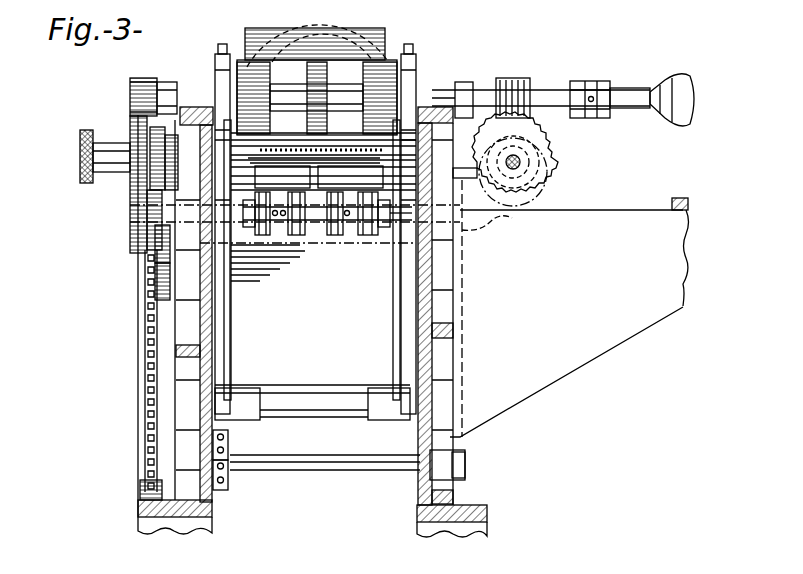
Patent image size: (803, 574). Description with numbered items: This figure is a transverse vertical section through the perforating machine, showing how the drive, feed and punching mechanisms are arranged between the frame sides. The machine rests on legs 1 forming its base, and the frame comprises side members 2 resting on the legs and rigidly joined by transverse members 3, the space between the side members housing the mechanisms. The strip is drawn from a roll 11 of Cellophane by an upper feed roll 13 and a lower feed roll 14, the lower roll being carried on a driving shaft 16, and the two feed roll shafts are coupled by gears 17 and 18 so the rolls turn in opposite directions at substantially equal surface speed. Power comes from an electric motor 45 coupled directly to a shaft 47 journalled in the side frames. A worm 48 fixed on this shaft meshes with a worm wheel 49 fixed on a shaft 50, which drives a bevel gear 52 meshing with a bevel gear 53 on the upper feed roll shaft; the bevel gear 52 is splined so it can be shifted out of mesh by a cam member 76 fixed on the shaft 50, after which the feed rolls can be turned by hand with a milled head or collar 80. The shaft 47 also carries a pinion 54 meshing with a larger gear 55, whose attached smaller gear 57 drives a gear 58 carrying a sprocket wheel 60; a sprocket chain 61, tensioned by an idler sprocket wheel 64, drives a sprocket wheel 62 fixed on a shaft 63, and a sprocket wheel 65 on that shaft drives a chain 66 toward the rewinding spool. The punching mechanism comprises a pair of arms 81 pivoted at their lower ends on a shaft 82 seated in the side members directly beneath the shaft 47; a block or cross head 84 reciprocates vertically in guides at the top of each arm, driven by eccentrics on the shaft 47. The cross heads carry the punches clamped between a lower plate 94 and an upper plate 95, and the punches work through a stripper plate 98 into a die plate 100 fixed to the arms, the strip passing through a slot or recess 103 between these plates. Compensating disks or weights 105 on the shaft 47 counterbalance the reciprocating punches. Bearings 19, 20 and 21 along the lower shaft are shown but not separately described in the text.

The legs 1 is at (208, 522).
The side members 2 is at (204, 314).
The transverse members 3 is at (270, 294).
The roll 11 is at (386, 32).
The upper feed roll 13 is at (366, 238).
The lower feed roll 14 is at (330, 238).
The driving shaft 16 is at (380, 238).
The gear 17 is at (152, 130).
The gear 18 is at (150, 222).
The bearing 19 is at (340, 238).
The bearing 20 is at (268, 236).
The sleeve 21 is at (300, 236).
The electric motor 45 is at (683, 74).
The shaft 47 is at (285, 93).
The worm 48 is at (514, 78).
The worm wheel 49 is at (558, 152).
The shaft 50 is at (520, 165).
The bevel gear 52 is at (548, 198).
The bevel gear 53 is at (504, 222).
The pinion 54 is at (130, 84).
The gear 55 is at (130, 206).
The gear 57 is at (176, 160).
The gear 58 is at (160, 288).
The sprocket wheel 60 is at (150, 268).
The sprocket chain 61 is at (145, 390).
The sprocket wheel 62 is at (145, 470).
The shaft 63 is at (318, 466).
The idler sprocket wheel 64 is at (145, 342).
The sprocket wheel 65 is at (228, 478).
The chain 66 is at (228, 436).
The cam member 76 is at (569, 308).
The milled head or collar 80 is at (80, 172).
The arms 81 is at (228, 342).
The shaft 82 is at (300, 408).
The block or cross head 84 is at (218, 60).
The plate 94 is at (285, 152).
The upper plate 95 is at (270, 144).
The stripper plate 98 is at (325, 158).
The die plate 100 is at (355, 166).
The slot or recess 103 is at (262, 172).
The compensating disks or weights 105 is at (340, 18).